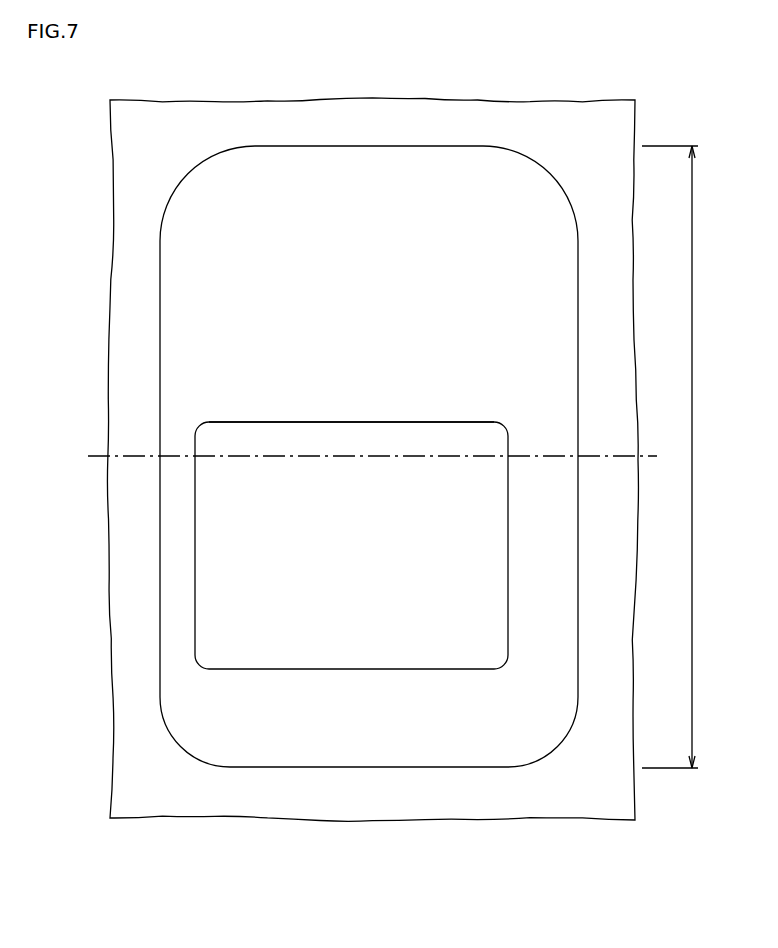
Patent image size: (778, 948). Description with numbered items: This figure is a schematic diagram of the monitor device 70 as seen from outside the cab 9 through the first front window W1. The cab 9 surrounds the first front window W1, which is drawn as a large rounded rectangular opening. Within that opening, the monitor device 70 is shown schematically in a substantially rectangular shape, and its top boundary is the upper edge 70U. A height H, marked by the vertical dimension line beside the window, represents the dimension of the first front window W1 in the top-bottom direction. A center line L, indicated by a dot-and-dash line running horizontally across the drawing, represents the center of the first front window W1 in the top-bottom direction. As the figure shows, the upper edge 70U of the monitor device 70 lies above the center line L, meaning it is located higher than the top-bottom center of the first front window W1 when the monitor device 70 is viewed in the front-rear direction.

The cab 9 is at (577, 120).
The first front window W1 is at (358, 188).
The monitor device 70 is at (362, 615).
The upper edge 70U is at (270, 420).
The center line L is at (645, 457).
The height H is at (675, 457).